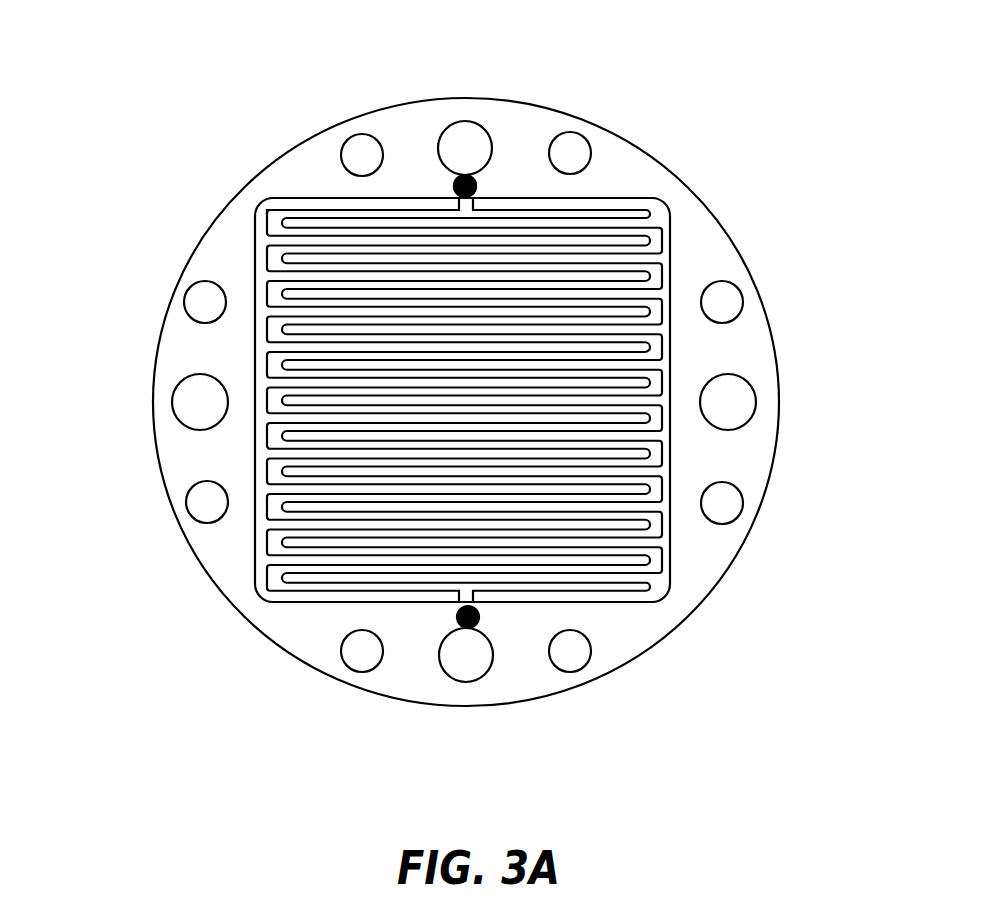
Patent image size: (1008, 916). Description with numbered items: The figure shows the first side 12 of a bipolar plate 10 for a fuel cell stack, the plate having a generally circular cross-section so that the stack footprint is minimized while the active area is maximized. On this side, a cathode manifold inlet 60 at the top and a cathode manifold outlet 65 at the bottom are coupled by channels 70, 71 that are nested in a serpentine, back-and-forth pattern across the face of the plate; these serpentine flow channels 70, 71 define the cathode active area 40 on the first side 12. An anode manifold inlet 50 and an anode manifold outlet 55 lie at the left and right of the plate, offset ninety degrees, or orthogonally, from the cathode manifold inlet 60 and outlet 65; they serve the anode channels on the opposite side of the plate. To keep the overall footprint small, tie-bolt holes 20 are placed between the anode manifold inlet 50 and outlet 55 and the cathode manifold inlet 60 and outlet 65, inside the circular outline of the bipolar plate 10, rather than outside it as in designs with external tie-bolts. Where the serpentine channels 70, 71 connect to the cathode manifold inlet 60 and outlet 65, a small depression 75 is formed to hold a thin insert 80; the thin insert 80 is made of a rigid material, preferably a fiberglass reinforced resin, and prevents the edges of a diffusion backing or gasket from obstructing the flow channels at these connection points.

The bipolar plate 10 is at (555, 107).
The first side 12 is at (327, 175).
The tie-bolt holes 20 is at (357, 145).
The cathode active area 40 is at (262, 250).
The anode manifold inlet 50 is at (185, 396).
The anode manifold outlet 55 is at (742, 403).
The cathode manifold inlet 60 is at (460, 130).
The cathode manifold outlet 65 is at (467, 670).
The serpentine flow channel 70 is at (653, 200).
The serpentine flow channel 71 is at (271, 205).
The small depression 75 is at (477, 183).
The thin insert 80 is at (455, 183).